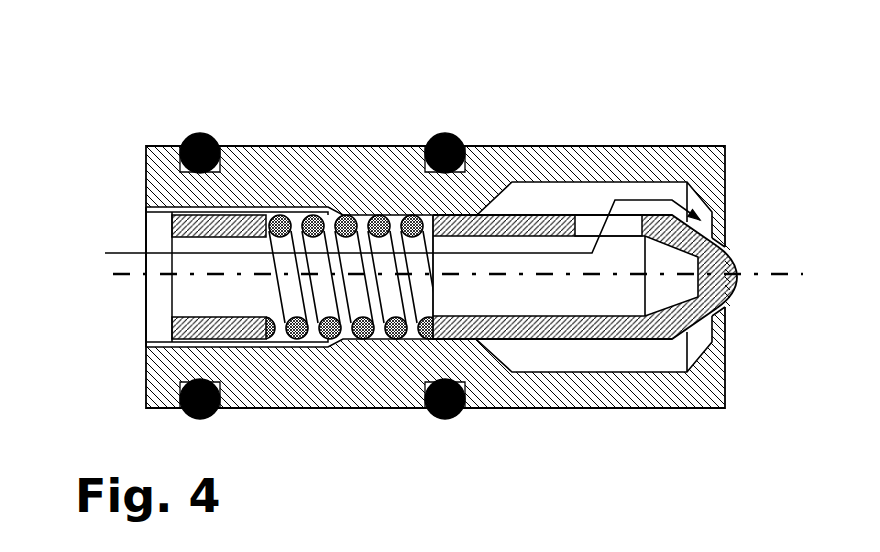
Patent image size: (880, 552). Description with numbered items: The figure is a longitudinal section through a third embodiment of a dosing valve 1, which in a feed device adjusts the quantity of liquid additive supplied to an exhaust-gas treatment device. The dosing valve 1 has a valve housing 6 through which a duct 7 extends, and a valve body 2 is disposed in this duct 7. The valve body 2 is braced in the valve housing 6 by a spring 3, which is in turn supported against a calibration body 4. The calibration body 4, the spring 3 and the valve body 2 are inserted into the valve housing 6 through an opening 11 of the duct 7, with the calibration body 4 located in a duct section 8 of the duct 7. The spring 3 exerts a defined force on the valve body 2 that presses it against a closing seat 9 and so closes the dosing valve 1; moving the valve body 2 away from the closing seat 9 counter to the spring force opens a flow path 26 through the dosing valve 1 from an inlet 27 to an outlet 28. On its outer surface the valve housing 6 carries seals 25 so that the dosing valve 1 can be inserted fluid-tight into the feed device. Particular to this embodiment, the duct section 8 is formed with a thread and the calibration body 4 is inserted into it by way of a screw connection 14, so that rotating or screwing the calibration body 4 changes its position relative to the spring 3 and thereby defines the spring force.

The dosing valve 1 is at (727, 101).
The valve body 2 is at (620, 350).
The spring 3 is at (376, 212).
The calibration body 4 is at (268, 212).
The valve housing 6 is at (547, 146).
The duct 7 is at (627, 363).
The duct section 8 is at (157, 323).
The closing seat 9 is at (730, 222).
The opening 11 is at (146, 222).
The screw connection 14 is at (193, 210).
The seals 25 is at (197, 134).
The flow path 26 is at (640, 198).
The inlet 27 is at (146, 278).
The outlet 28 is at (740, 282).